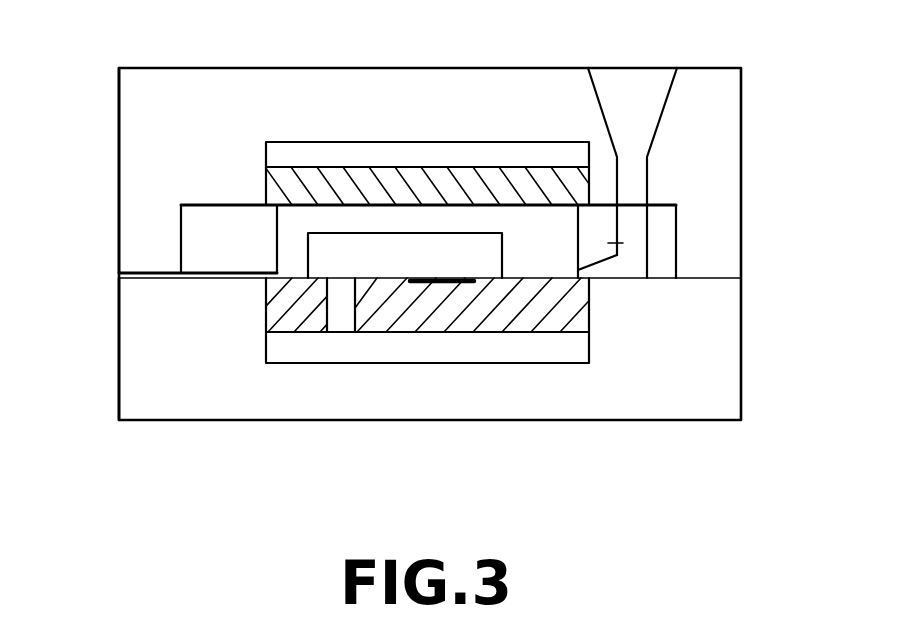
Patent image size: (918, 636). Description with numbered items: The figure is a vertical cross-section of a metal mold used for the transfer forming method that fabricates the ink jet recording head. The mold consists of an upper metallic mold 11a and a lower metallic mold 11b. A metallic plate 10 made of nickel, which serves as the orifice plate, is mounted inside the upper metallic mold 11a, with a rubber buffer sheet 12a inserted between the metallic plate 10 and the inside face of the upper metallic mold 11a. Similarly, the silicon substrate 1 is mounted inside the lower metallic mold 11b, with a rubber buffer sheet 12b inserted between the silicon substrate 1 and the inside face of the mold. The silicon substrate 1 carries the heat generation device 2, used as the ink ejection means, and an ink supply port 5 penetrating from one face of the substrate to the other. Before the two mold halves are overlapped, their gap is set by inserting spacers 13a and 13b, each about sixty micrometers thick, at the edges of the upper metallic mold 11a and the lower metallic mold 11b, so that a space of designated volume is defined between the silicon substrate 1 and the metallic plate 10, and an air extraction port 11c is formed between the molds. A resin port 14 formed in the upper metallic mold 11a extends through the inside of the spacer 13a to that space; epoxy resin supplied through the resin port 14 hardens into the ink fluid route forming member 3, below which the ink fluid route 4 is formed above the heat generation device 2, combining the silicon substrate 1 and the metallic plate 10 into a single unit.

The silicon substrate 1 is at (582, 315).
The heat generation device 2 is at (448, 284).
The ink fluid route forming member 3 is at (455, 218).
The ink fluid route 4 is at (488, 240).
The ink supply port 5 is at (343, 320).
The metallic plate 10 is at (305, 180).
The upper metallic mold 11a is at (127, 199).
The lower metallic mold 11b is at (125, 290).
The air extraction port 11c is at (147, 279).
The rubber buffer sheet 12a is at (383, 155).
The rubber buffer sheet 12b is at (557, 350).
The spacer 13a is at (663, 245).
The spacer 13b is at (207, 212).
The resin port 14 is at (663, 103).